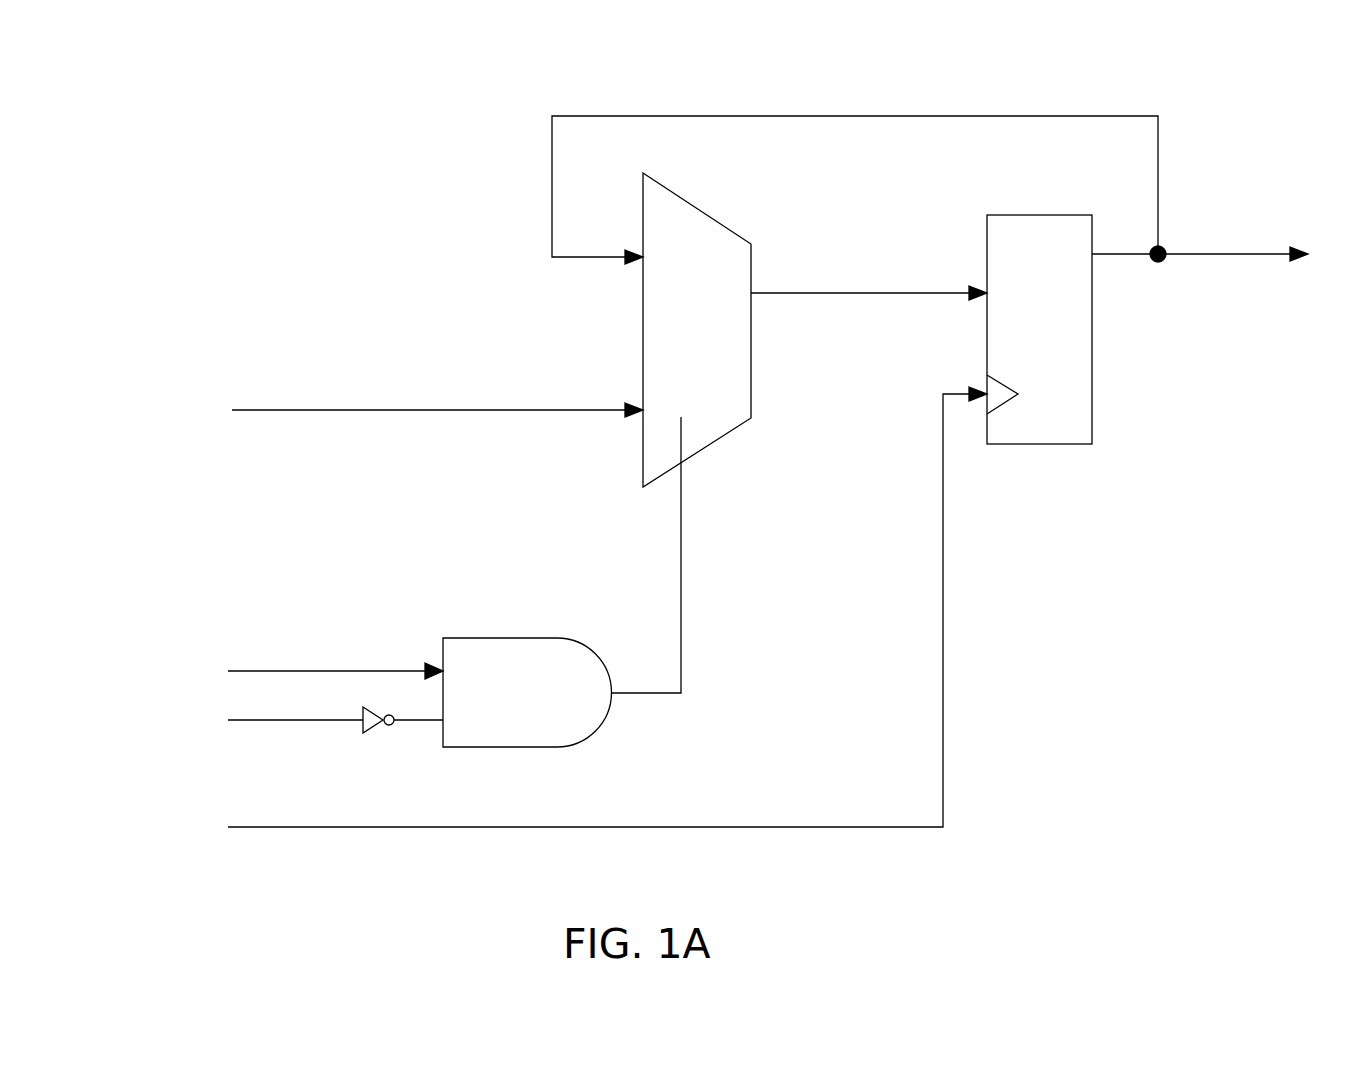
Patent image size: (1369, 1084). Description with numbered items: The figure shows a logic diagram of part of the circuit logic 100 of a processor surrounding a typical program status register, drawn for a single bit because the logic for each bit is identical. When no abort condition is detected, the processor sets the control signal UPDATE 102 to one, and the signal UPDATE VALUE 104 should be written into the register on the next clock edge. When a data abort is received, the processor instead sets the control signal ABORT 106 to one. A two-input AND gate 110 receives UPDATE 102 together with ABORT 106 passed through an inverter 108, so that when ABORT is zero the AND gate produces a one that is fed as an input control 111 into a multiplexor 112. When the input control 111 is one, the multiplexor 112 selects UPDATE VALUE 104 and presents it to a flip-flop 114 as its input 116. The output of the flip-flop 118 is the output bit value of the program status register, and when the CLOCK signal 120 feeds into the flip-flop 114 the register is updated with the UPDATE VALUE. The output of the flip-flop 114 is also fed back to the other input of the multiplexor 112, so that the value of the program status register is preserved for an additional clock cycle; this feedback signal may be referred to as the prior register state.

The circuit logic 100 is at (262, 137).
The UPDATE control signal 102 is at (368, 668).
The UPDATE VALUE signal 104 is at (368, 405).
The ABORT control signal 106 is at (262, 722).
The inverter 108 is at (370, 730).
The two-input AND gate 110 is at (590, 725).
The input control 111 is at (683, 560).
The multiplexor 112 is at (705, 445).
The flip-flop 114 is at (1092, 412).
The flip-flop input 116 is at (816, 287).
The flip-flop output 118 is at (1203, 248).
The CLOCK signal 120 is at (262, 828).